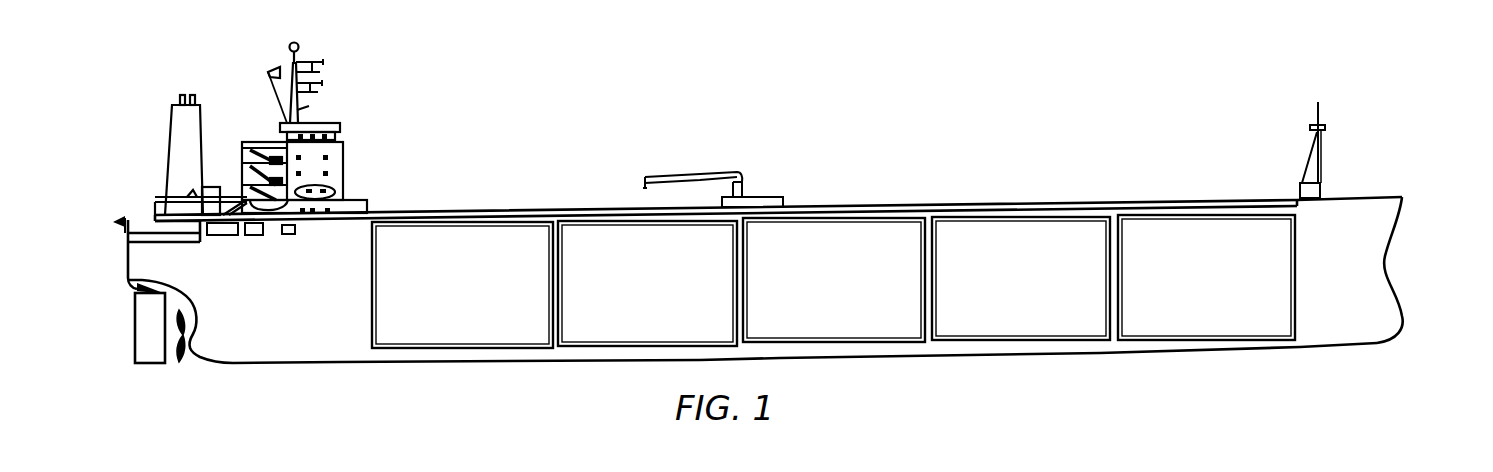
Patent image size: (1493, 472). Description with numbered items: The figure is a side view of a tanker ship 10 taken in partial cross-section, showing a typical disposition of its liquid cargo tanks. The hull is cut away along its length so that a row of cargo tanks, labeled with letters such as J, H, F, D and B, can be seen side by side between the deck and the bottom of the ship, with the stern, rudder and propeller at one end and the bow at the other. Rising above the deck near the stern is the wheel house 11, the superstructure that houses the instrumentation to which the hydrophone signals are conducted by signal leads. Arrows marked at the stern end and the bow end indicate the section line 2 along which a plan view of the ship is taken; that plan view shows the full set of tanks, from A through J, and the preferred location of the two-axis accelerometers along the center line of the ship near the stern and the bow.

The section line 2—2' 2 is at (62, 267).
The tanker ship 10 is at (1000, 160).
The wheel house 11 is at (345, 151).